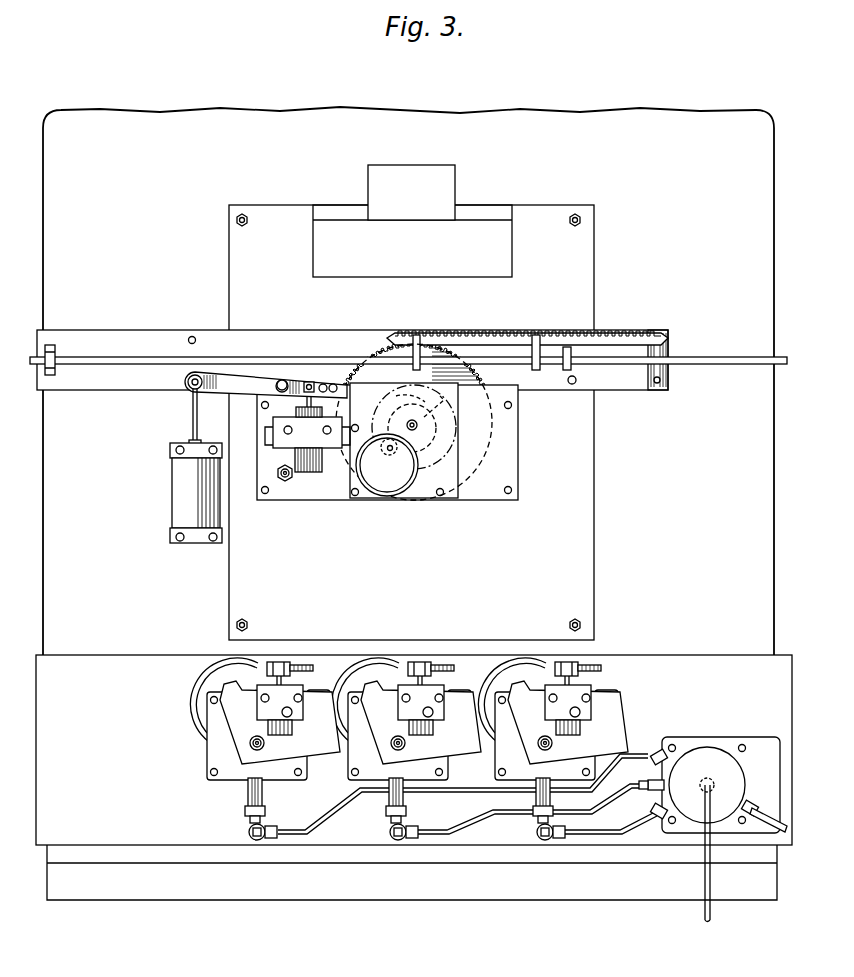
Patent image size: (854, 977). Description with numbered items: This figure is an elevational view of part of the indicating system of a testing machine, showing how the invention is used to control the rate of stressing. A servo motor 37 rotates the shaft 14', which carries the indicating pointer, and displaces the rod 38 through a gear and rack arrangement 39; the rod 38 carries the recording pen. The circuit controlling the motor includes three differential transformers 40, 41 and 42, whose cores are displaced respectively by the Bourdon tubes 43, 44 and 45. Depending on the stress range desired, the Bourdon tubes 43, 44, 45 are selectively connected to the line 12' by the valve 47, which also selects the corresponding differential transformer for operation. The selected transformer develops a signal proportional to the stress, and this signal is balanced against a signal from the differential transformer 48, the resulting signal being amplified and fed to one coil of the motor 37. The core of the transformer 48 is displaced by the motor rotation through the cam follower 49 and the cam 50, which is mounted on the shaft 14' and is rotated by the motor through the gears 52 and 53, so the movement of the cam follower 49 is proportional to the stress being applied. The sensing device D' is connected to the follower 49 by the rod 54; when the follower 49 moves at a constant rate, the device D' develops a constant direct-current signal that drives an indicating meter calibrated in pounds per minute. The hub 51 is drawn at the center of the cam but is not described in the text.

The rod 38 is at (118, 356).
The cam follower 49 is at (238, 382).
The rod 54 is at (192, 413).
The sensing device D' is at (171, 493).
The differential transformer 48 is at (305, 462).
The servo motor 37 is at (382, 483).
The gear 52 is at (393, 478).
The gear and rack arrangement 39 is at (440, 460).
The gear 53 is at (437, 443).
The cam 50 is at (428, 425).
The hub 51 is at (437, 420).
The shaft 14' is at (527, 374).
The Bourdon tube 43 is at (212, 668).
The differential transformer 40 is at (283, 693).
The Bourdon tube 44 is at (363, 662).
The differential transformer 41 is at (440, 675).
The Bourdon tube 45 is at (505, 670).
The differential transformer 42 is at (575, 688).
The valve 47 is at (699, 755).
The line 12' is at (762, 867).